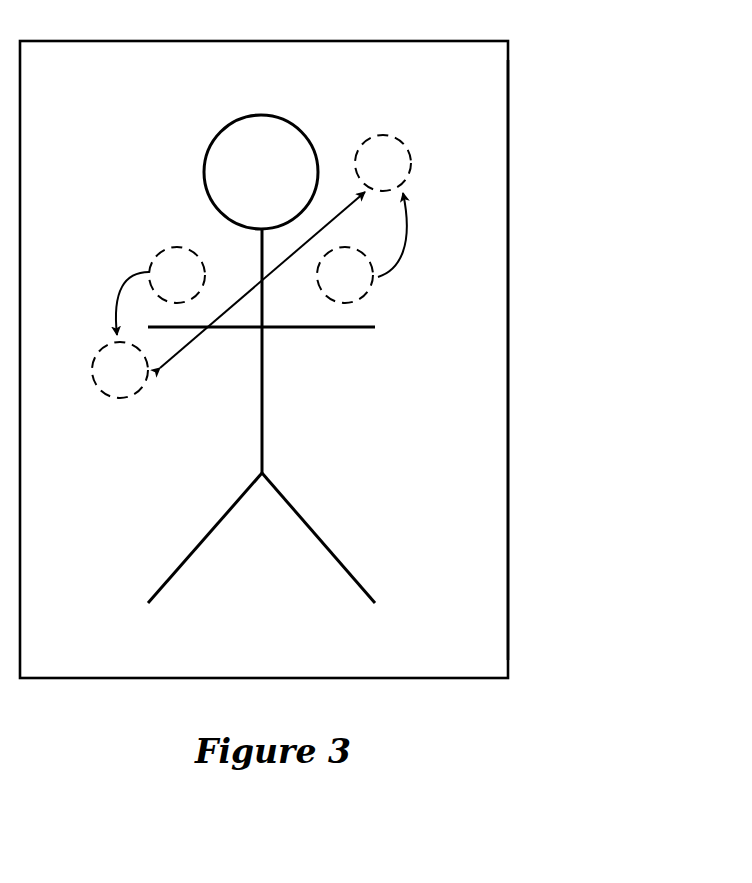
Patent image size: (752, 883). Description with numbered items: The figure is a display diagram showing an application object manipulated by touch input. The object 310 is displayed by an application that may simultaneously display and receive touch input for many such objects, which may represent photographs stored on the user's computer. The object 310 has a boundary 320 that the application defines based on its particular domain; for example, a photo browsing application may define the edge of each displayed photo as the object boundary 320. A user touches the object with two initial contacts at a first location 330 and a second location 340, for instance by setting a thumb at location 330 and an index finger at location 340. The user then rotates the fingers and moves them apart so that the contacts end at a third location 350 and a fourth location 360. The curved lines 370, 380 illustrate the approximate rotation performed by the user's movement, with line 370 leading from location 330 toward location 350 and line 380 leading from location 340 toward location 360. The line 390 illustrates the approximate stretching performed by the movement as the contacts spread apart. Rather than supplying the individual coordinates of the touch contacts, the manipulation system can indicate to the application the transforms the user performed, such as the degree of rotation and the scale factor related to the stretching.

The object 310 is at (264, 349).
The boundary 320 is at (508, 118).
The location 330 is at (177, 266).
The location 340 is at (345, 287).
The location 350 is at (120, 380).
The location 360 is at (383, 152).
The line 370 is at (115, 303).
The line 380 is at (410, 235).
The line 390 is at (262, 280).